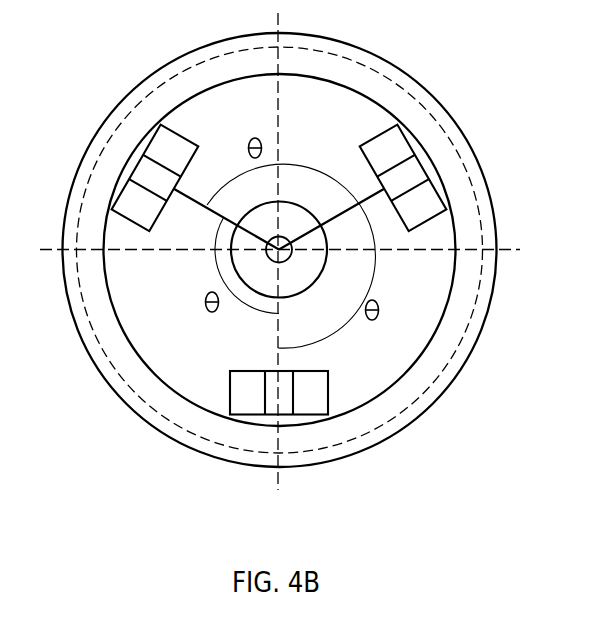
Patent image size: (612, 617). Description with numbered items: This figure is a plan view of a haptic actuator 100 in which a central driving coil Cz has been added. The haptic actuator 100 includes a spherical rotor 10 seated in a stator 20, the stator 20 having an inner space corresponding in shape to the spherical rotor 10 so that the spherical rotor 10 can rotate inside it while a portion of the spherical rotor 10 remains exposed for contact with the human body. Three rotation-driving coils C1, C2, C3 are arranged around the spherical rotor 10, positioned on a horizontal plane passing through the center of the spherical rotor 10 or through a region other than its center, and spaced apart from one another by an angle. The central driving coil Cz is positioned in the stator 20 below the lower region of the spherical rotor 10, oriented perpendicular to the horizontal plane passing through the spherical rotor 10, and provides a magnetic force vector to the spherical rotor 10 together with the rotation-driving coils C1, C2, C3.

The haptic actuator 100 is at (84, 19).
The spherical rotor 10 is at (355, 115).
The stator 20 is at (485, 217).
The rotation-driving coil C1 is at (133, 168).
The rotation-driving coil C2 is at (422, 163).
The rotation-driving coil C3 is at (310, 416).
The central driving coil Cz is at (217, 262).